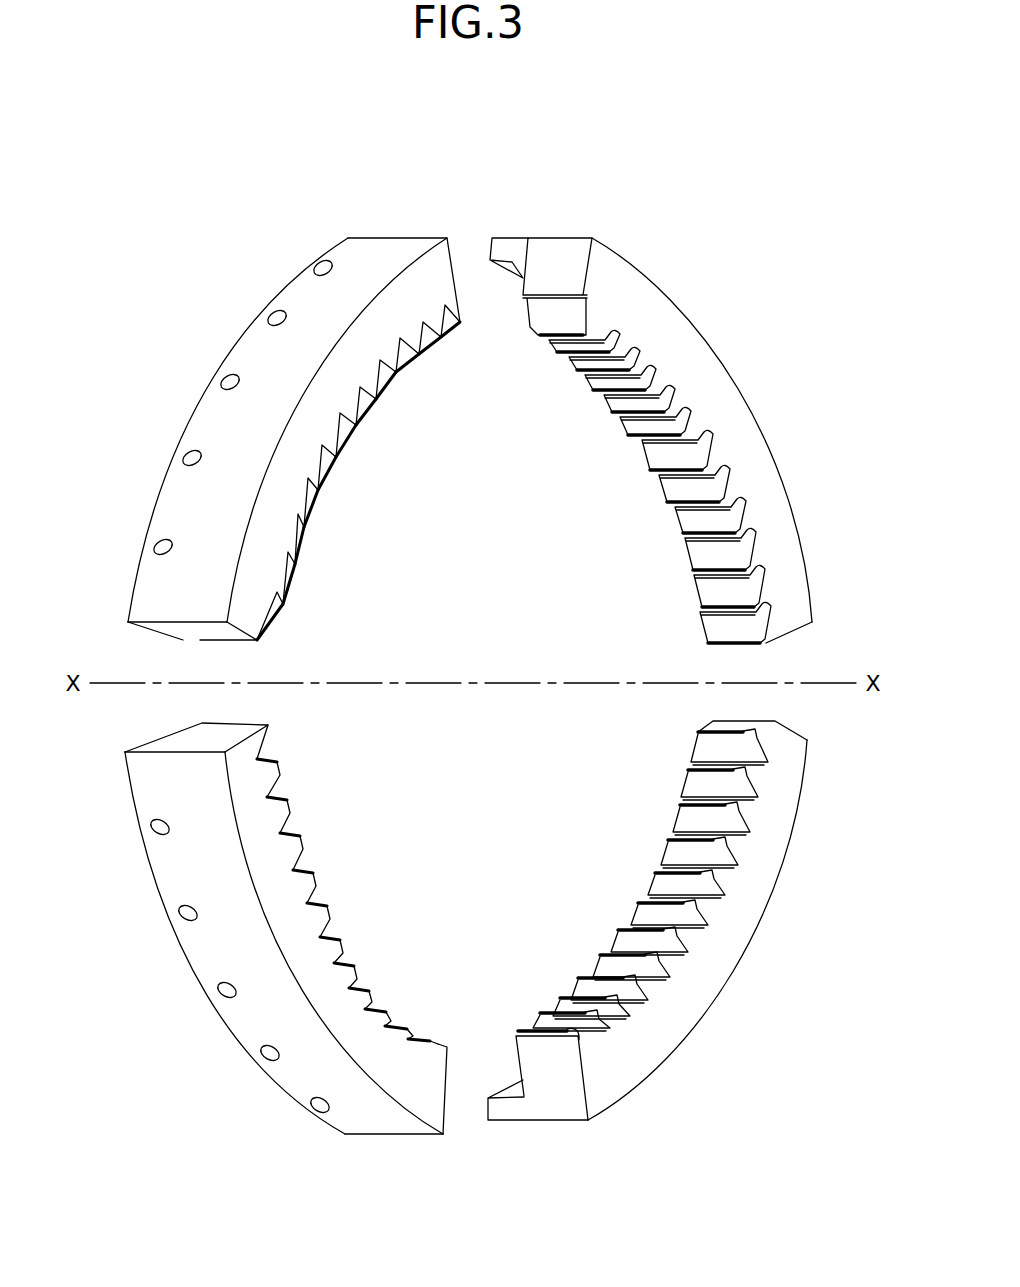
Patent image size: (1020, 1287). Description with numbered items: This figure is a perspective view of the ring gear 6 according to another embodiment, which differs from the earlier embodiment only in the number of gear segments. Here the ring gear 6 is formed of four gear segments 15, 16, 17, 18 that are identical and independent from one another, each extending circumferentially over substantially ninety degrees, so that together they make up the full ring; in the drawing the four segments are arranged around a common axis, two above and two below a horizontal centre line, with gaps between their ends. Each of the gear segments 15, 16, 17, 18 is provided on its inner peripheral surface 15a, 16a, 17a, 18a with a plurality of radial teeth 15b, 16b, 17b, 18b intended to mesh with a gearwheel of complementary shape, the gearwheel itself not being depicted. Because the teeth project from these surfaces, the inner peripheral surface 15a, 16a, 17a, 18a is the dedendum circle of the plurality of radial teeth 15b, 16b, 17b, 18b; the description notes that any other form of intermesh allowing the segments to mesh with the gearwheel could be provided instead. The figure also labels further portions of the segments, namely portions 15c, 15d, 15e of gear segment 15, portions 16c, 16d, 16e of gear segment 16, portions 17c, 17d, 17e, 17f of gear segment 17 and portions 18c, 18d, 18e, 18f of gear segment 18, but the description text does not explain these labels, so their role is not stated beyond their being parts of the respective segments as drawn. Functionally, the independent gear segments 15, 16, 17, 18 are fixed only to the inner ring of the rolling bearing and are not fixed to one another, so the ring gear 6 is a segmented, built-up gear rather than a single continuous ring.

The ring gear 6 is at (668, 183).
The gear segment 15 is at (673, 418).
The inner peripheral surface 15a is at (708, 432).
The radial teeth 15b is at (670, 448).
The outer peripheral surface 15c is at (798, 562).
The end block 15d is at (533, 262).
The engagement tab 15e is at (508, 246).
The gear segment 16 is at (660, 946).
The inner peripheral surface 16a is at (733, 826).
The radial teeth 16b is at (697, 843).
The outer peripheral surface 16c is at (727, 963).
The end block 16d is at (513, 1067).
The engagement tab 16e is at (500, 1117).
The gear segment 17 is at (242, 917).
The inner peripheral surface 17a is at (345, 953).
The radial teeth 17b is at (340, 922).
The inner surface 17c is at (352, 1027).
The end face 17d is at (202, 730).
The end edge 17e is at (148, 750).
The holes 17f is at (157, 827).
The gear segment 18 is at (253, 456).
The inner peripheral surface 18a is at (325, 445).
The radial teeth 18b is at (302, 485).
The inner surface 18c is at (355, 357).
The end face 18d is at (152, 627).
The end edge 18e is at (130, 622).
The holes 18f is at (314, 268).